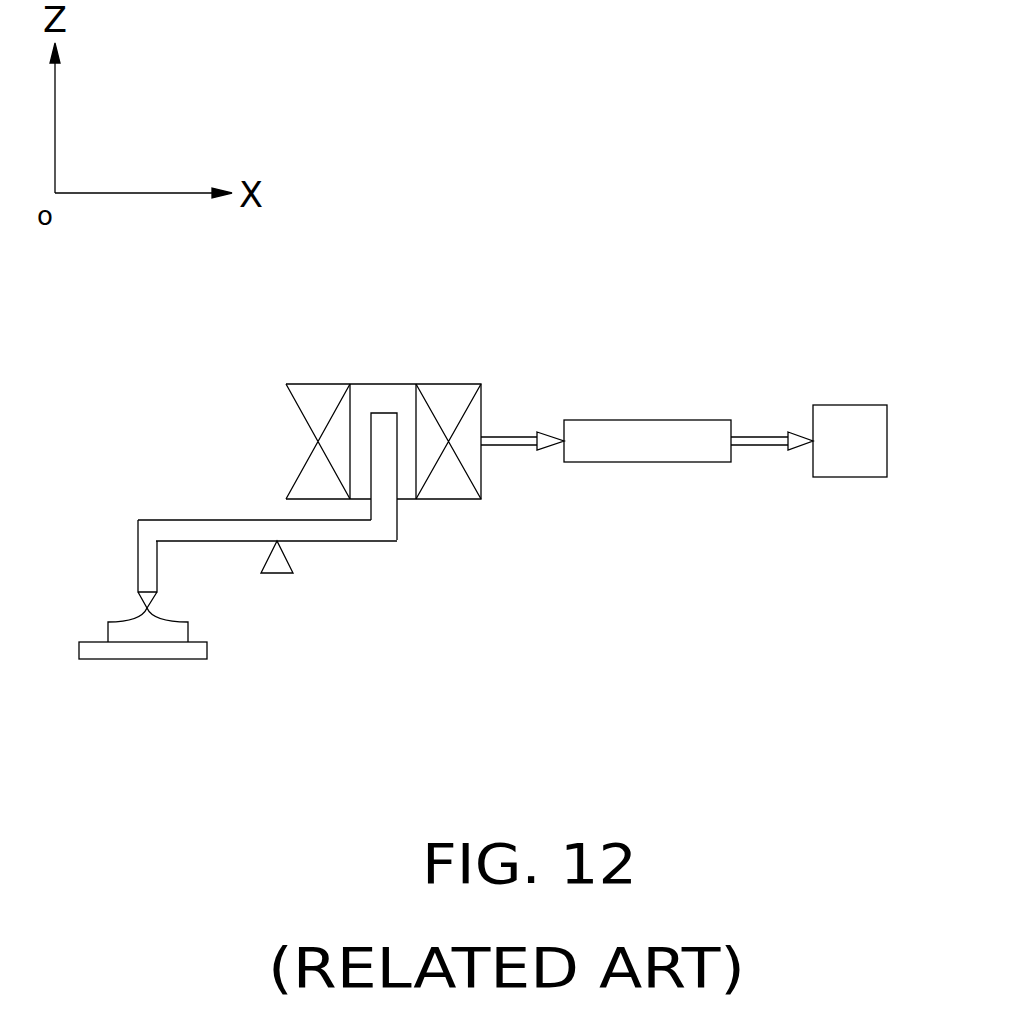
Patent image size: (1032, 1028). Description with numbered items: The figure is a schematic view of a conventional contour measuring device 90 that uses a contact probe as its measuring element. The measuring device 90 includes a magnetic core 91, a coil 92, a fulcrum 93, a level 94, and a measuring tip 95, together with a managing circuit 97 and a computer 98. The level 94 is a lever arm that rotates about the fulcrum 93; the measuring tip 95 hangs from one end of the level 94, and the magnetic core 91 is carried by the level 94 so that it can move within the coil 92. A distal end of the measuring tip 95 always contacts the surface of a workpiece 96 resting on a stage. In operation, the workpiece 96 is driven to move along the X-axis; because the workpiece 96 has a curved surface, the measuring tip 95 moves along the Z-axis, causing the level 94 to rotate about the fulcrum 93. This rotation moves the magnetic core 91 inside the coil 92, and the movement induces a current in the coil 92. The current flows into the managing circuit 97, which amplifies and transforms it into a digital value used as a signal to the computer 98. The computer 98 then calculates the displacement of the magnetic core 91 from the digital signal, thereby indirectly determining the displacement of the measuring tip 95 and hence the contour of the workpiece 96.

The measuring device 90 is at (453, 88).
The magnetic core 91 is at (382, 432).
The coil 92 is at (313, 400).
The fulcrum 93 is at (278, 562).
The level 94 is at (233, 528).
The measuring tip 95 is at (143, 560).
The workpiece 96 is at (123, 630).
The managing circuit 97 is at (648, 435).
The computer 98 is at (842, 420).